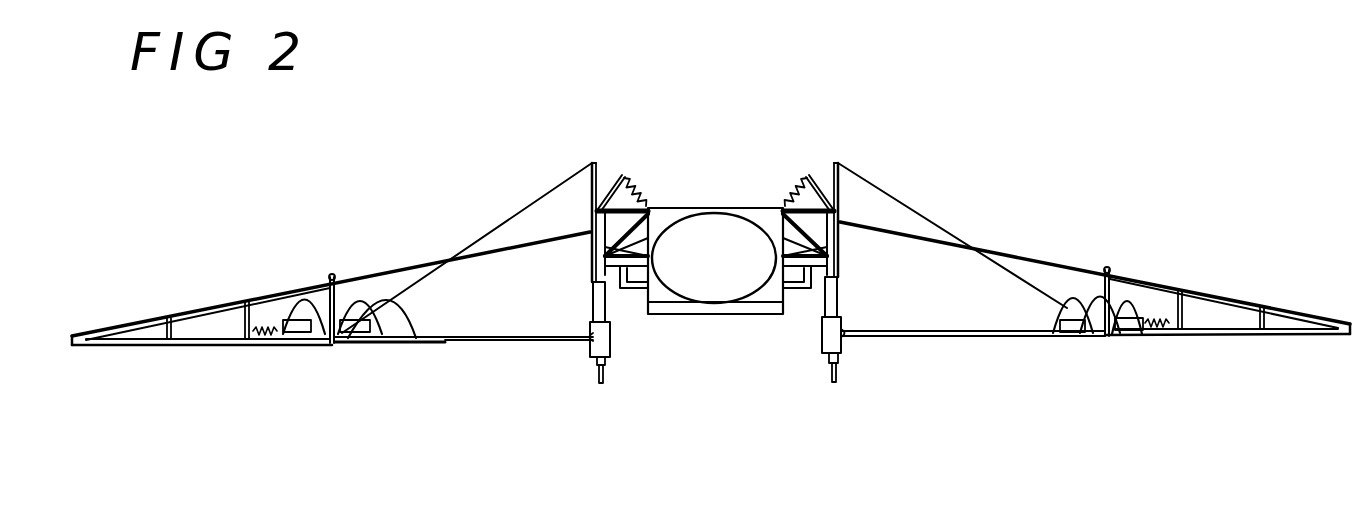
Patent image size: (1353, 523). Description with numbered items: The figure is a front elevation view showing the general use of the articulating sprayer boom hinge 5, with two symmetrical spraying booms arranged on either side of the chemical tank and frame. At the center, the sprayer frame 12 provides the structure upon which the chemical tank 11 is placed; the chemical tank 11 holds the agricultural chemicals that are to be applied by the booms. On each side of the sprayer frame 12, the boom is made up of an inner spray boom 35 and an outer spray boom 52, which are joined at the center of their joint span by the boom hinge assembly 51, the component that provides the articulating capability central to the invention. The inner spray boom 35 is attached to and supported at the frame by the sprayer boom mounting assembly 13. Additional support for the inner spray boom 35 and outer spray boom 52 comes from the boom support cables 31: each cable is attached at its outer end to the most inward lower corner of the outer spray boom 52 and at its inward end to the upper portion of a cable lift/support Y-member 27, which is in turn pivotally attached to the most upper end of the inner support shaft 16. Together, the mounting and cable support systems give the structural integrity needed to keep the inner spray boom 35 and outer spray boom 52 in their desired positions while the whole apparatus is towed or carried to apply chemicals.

The articulating sprayer boom hinge 5 is at (282, 263).
The chemical tank 11 is at (721, 271).
The sprayer frame 12 is at (682, 318).
The sprayer boom mounting assembly 13 is at (777, 195).
The inner support shaft 16 is at (588, 300).
The cable lift/support Y-member 27 is at (583, 202).
The boom support cable 31 is at (468, 237).
The inner spray boom 35 is at (440, 350).
The boom hinge assembly 51 is at (330, 353).
The outer spray boom 52 is at (230, 350).